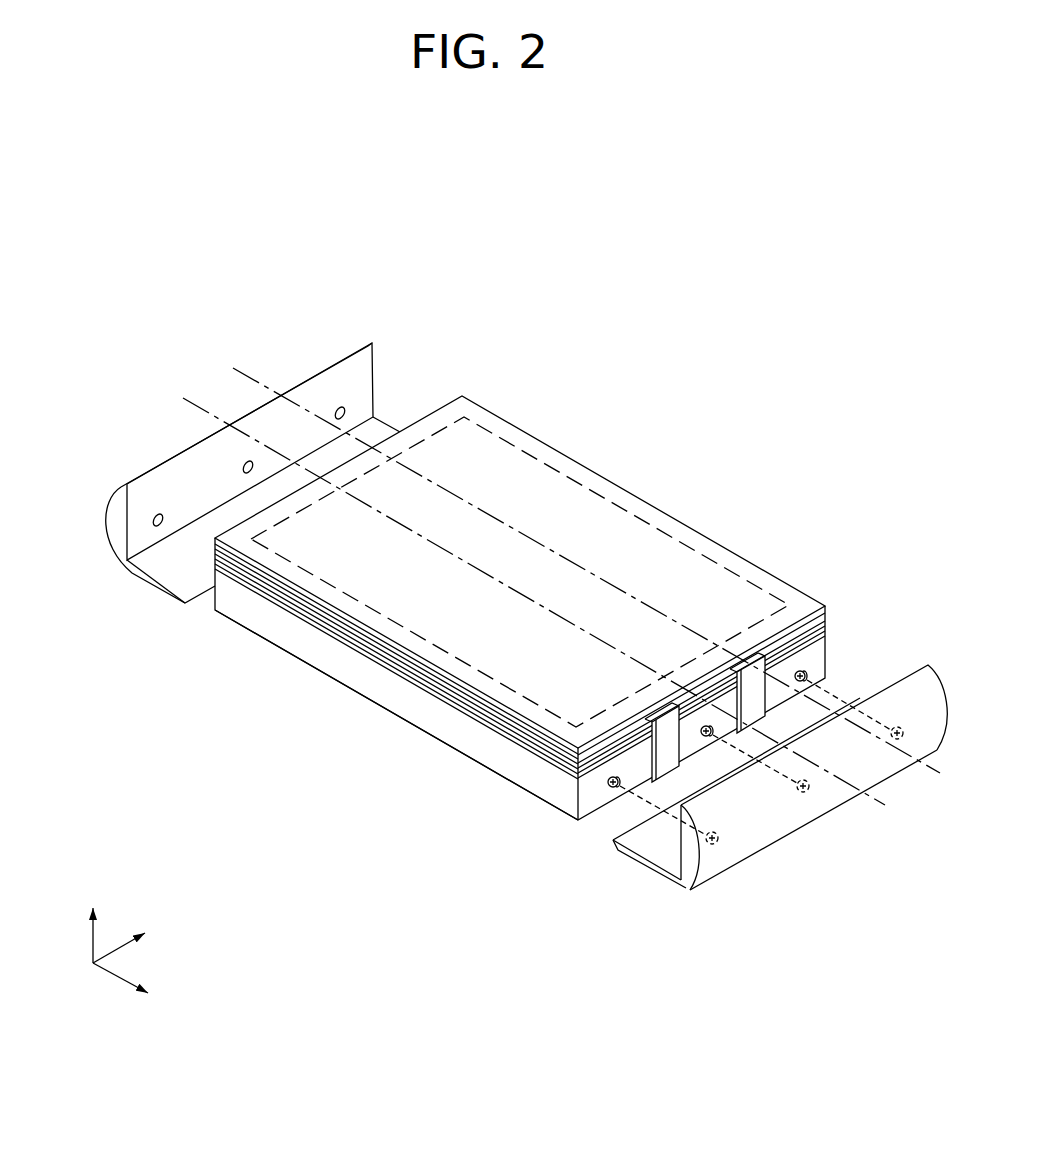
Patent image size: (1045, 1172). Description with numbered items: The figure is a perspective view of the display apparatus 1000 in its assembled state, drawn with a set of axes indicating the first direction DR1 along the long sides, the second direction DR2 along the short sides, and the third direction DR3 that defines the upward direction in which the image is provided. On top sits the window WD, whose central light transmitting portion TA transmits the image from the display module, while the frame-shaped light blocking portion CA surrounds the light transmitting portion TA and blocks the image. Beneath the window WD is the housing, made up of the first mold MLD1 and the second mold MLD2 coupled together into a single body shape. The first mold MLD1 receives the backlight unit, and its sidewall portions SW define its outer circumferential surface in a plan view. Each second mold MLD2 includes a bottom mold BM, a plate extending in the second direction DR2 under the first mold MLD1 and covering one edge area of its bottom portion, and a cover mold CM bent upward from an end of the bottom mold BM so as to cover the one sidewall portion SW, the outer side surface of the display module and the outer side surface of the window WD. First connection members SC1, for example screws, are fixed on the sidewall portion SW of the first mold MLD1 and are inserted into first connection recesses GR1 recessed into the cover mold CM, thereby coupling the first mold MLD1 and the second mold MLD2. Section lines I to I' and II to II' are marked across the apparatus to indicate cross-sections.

The display apparatus 1000 is at (796, 353).
The light blocking portion CA is at (528, 444).
The light transmitting portion TA is at (576, 504).
The window WD is at (705, 528).
The first connection recess GR1 is at (158, 527).
The first mold MLD1 is at (360, 698).
The second mold MLD2 is at (173, 594).
The sidewall portion SW is at (436, 722).
The first connection member SC1 is at (607, 785).
The bottom mold BM is at (637, 862).
The cover mold CM is at (690, 862).
The section line I-I' I is at (511, 601).
The section line II-II' II is at (563, 570).
The section line I-I' end I' is at (862, 820).
The section line II-II' end II' is at (916, 788).
The first direction DR1 is at (146, 987).
The second direction DR2 is at (146, 940).
The third direction DR3 is at (91, 920).